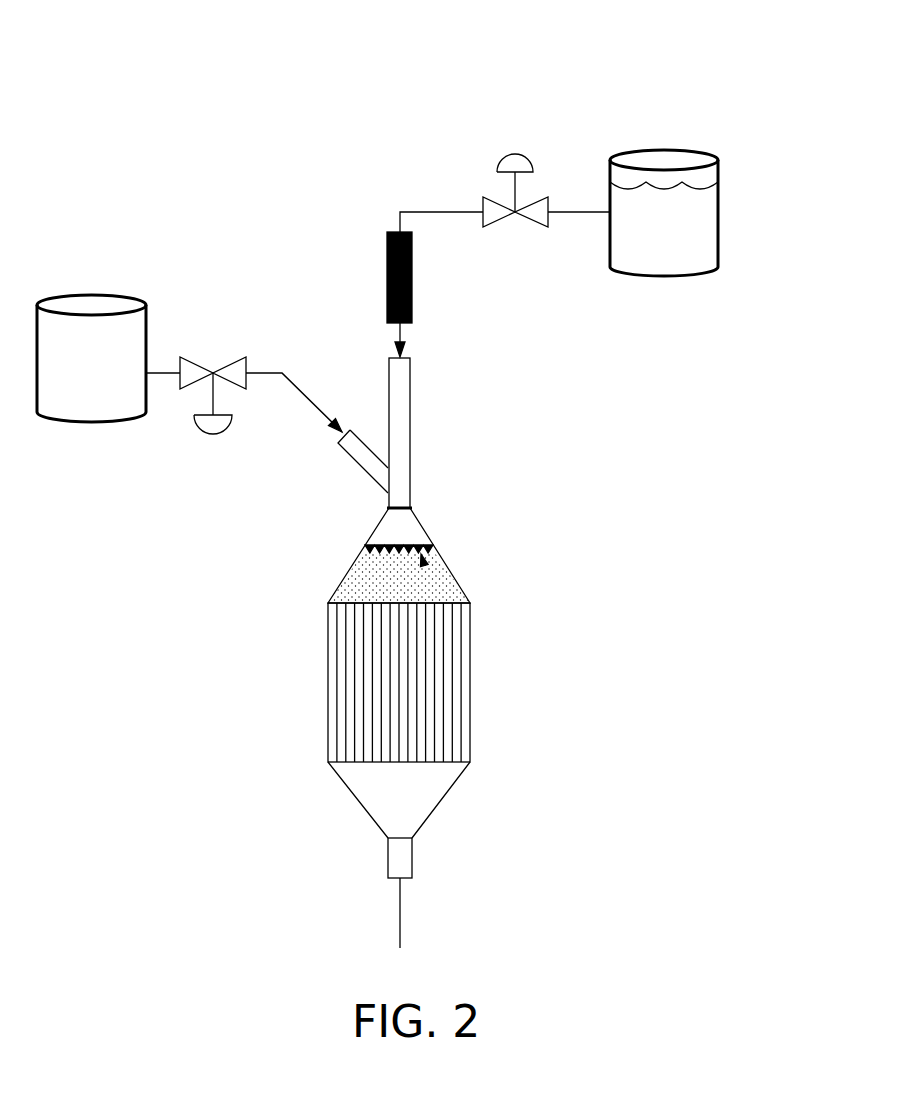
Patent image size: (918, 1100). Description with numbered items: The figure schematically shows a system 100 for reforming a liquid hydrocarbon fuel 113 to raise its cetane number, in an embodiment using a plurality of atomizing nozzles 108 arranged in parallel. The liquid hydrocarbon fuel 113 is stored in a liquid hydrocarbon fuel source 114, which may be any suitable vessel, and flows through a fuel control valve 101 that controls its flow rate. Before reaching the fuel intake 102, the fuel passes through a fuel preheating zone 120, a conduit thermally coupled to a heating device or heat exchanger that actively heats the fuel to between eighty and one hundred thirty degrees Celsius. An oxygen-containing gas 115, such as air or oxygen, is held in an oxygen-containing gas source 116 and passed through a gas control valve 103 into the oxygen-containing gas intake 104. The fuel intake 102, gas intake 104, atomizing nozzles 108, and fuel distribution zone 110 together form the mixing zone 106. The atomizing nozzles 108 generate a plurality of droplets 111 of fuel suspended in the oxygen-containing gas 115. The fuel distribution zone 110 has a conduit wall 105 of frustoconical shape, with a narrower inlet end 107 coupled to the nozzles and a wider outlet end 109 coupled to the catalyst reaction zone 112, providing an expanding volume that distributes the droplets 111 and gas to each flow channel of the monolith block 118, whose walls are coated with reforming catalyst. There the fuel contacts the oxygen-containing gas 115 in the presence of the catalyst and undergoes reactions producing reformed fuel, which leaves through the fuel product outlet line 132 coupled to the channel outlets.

The system 100 is at (99, 50).
The fuel control valve 101 is at (515, 152).
The fuel intake 102 is at (389, 373).
The gas control valve 103 is at (213, 434).
The oxygen-containing gas intake 104 is at (340, 450).
The conduit wall 105 is at (407, 553).
The mixing zone 106 is at (443, 352).
The inlet end 107 is at (424, 565).
The atomizing nozzle 108 is at (382, 545).
The outlet end 109 is at (447, 603).
The fuel distribution zone 110 is at (535, 552).
The droplets 111 is at (349, 580).
The catalyst reaction zone 112 is at (386, 686).
The liquid hydrocarbon fuel 113 is at (712, 203).
The liquid hydrocarbon fuel source 114 is at (704, 213).
The oxygen-containing gas 115 is at (75, 407).
The oxygen-containing gas source 116 is at (131, 381).
The monolith block 118 is at (462, 693).
The fuel preheating zone 120 is at (412, 230).
The fuel product outlet line 132 is at (398, 915).